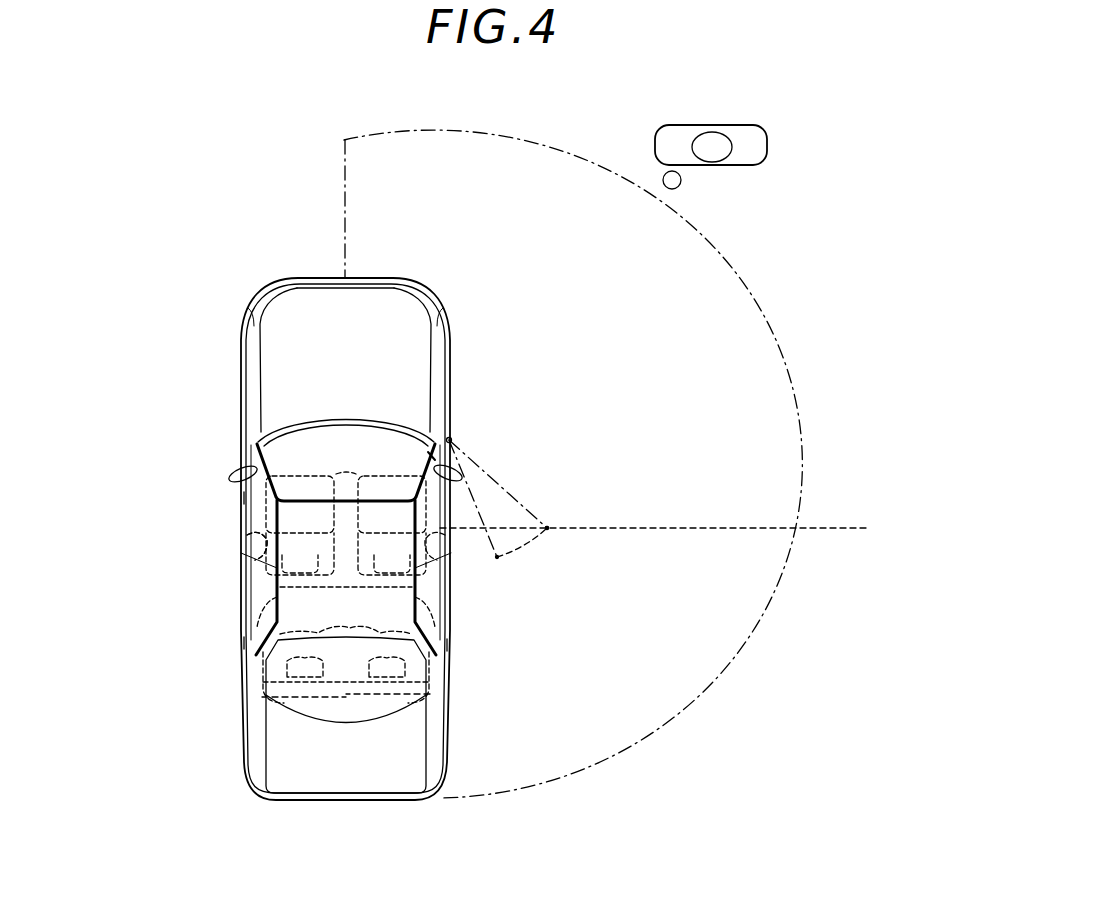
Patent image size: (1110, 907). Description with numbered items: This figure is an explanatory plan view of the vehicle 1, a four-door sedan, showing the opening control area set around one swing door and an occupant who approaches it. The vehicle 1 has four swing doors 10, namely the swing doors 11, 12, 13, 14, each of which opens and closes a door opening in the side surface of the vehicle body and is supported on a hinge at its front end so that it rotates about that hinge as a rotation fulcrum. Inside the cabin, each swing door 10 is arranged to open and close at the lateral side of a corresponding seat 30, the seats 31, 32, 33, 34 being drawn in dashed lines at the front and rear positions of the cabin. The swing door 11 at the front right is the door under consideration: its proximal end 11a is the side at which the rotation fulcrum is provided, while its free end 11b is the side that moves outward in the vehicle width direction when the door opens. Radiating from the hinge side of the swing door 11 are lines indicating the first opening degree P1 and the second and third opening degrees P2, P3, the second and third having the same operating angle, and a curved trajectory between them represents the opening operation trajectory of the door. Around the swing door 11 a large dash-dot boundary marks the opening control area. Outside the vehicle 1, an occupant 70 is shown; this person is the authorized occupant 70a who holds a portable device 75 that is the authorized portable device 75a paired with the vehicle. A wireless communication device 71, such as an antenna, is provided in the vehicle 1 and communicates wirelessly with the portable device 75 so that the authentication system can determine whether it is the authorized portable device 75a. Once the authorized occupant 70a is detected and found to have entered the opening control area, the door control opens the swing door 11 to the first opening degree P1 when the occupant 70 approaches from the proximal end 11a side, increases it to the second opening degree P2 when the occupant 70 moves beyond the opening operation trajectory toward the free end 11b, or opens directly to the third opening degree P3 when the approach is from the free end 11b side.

The vehicle 1 is at (165, 276).
The swing door 10 is at (368, 533).
The swing door 11 is at (443, 500).
The proximal end 11a is at (449, 440).
The free end 11b is at (447, 555).
The swing door 12 is at (246, 498).
The swing door 13 is at (447, 645).
The swing door 14 is at (243, 643).
The seat 30 is at (345, 548).
The seat 31 is at (357, 468).
The seat 32 is at (244, 548).
The seat 33 is at (430, 694).
The seat 34 is at (262, 697).
The occupant 70 is at (720, 125).
The authorized occupant 70a is at (712, 147).
The wireless communication device 71 is at (428, 456).
The portable device 75 is at (680, 187).
The authorized portable device 75a is at (672, 180).
The first opening degree P1 is at (506, 572).
The second opening degree P2 is at (566, 544).
The third opening degree P3 is at (585, 544).